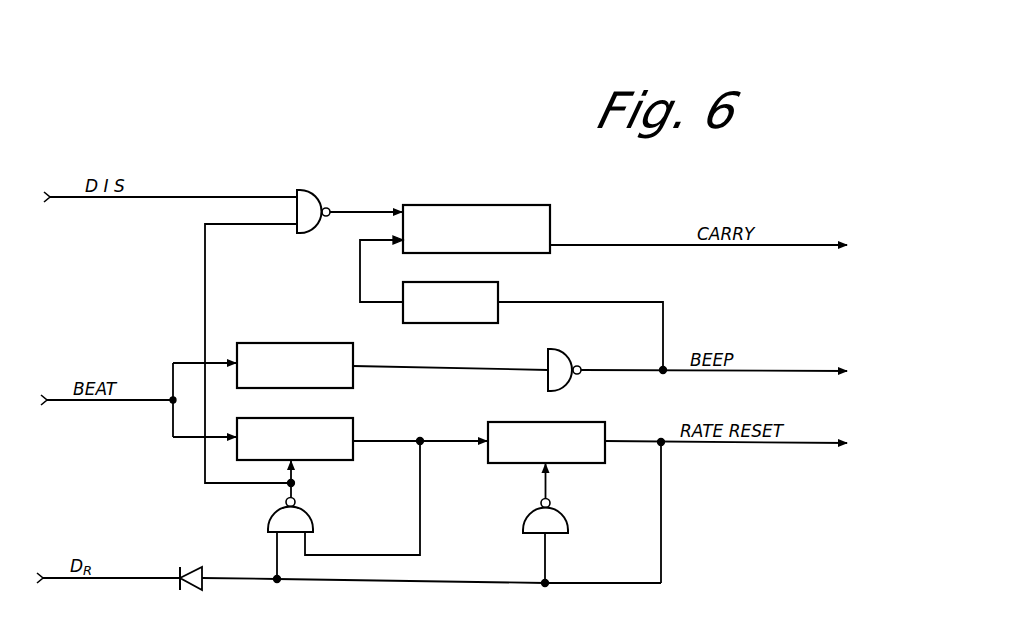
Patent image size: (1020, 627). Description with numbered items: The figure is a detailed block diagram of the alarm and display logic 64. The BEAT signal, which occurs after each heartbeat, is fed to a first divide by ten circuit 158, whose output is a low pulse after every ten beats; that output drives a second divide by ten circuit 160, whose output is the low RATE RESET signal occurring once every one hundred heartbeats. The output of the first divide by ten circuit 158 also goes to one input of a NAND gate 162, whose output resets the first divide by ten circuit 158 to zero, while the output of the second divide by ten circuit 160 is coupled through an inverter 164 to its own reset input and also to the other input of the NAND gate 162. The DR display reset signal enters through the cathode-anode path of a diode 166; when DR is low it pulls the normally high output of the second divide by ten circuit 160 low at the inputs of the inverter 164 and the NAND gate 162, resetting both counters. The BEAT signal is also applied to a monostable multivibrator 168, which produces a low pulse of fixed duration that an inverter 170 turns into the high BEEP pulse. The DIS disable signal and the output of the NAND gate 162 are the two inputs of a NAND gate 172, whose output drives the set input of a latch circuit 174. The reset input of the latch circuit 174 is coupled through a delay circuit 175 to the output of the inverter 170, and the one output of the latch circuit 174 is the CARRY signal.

The alarm and display logic 64 is at (163, 268).
The first divide by ten circuit 158 is at (340, 418).
The second divide by ten circuit 160 is at (580, 422).
The NAND gate 162 is at (313, 520).
The inverter 164 is at (568, 522).
The diode 166 is at (190, 566).
The monostable multivibrator 168 is at (296, 342).
The inverter 170 is at (566, 350).
The NAND gate 172 is at (318, 188).
The latch circuit 174 is at (493, 204).
The delay circuit 175 is at (447, 328).